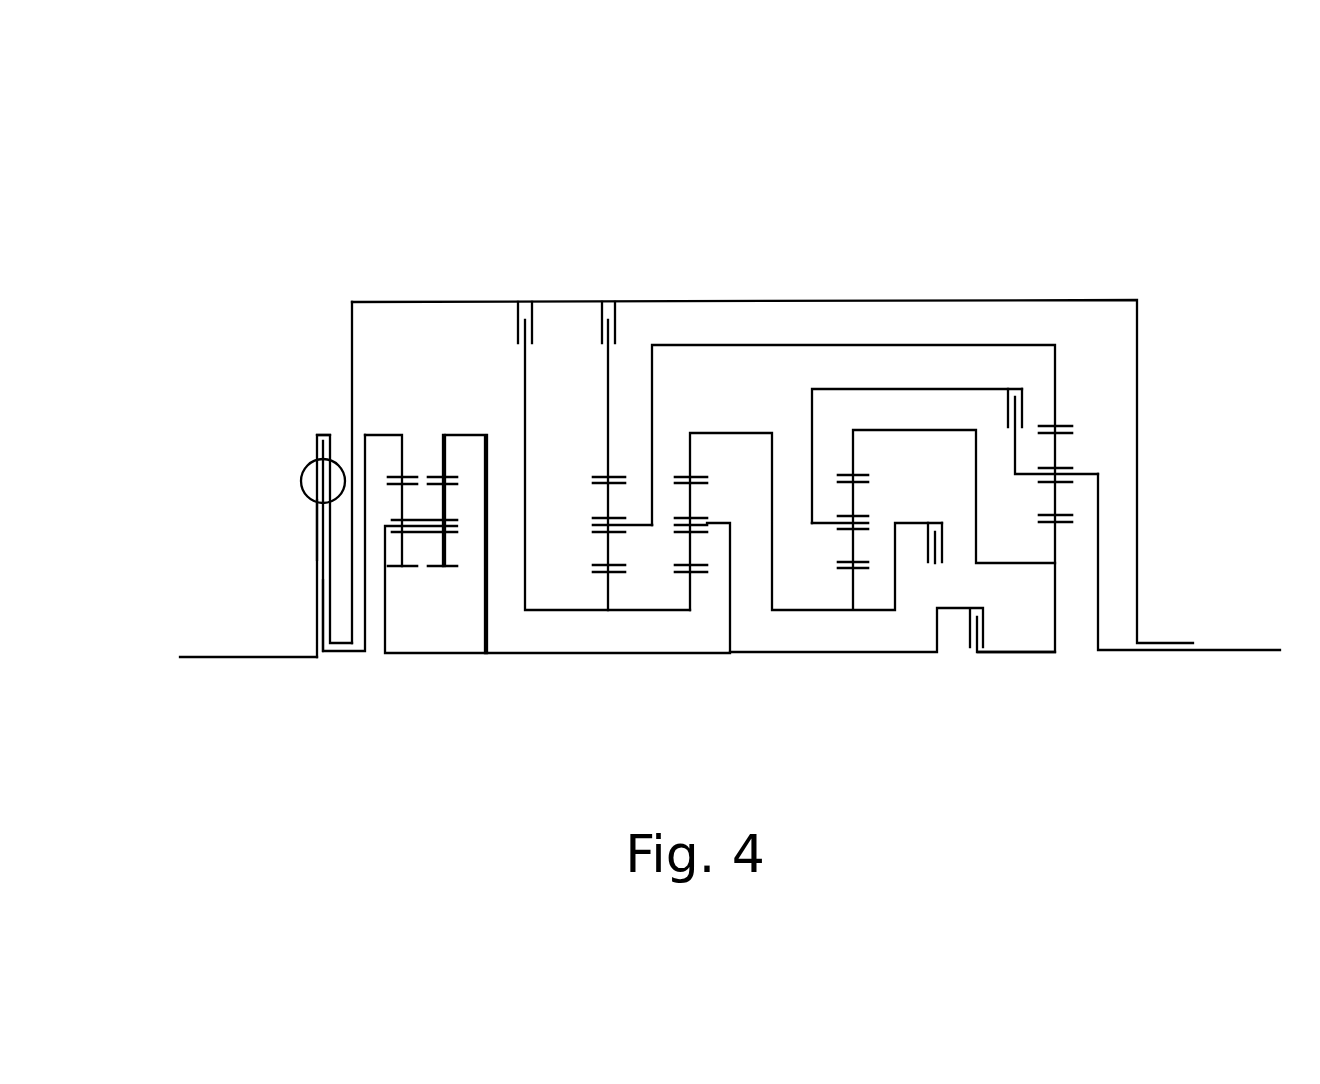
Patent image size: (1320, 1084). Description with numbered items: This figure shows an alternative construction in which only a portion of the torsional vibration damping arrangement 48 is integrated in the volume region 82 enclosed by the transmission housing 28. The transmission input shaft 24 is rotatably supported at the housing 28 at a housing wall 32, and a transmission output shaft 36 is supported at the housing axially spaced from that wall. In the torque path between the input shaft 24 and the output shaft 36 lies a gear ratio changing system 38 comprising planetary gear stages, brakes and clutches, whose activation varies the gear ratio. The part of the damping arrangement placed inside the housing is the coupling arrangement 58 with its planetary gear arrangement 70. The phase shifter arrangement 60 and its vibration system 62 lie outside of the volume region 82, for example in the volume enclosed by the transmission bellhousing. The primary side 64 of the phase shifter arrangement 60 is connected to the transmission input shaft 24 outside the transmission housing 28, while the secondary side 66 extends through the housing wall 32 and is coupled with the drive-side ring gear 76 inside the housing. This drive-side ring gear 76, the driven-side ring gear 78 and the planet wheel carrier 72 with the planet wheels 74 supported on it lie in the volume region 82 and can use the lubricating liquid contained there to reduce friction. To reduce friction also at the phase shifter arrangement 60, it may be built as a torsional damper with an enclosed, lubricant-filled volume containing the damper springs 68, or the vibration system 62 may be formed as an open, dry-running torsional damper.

The transmission input shaft 24 is at (221, 659).
The transmission housing 28 is at (645, 302).
The housing wall 32 is at (352, 330).
The transmission output shaft 36 is at (1233, 645).
The gear ratio changing system 38 is at (1032, 326).
The torsional vibration damping arrangement 48 is at (266, 316).
The coupling arrangement 58 is at (404, 382).
The phase shifter arrangement 60 is at (296, 438).
The vibration system 62 is at (284, 501).
The primary side 64 is at (317, 433).
The secondary side 66 is at (322, 593).
The damper springs 68 is at (303, 466).
The planetary gear arrangement 70 is at (452, 394).
The planet wheel carrier 72 is at (387, 612).
The planet wheels 74 is at (447, 543).
The drive-side ring gear 76 is at (402, 472).
The driven-side ring gear 78 is at (447, 460).
The volume region 82 is at (805, 317).